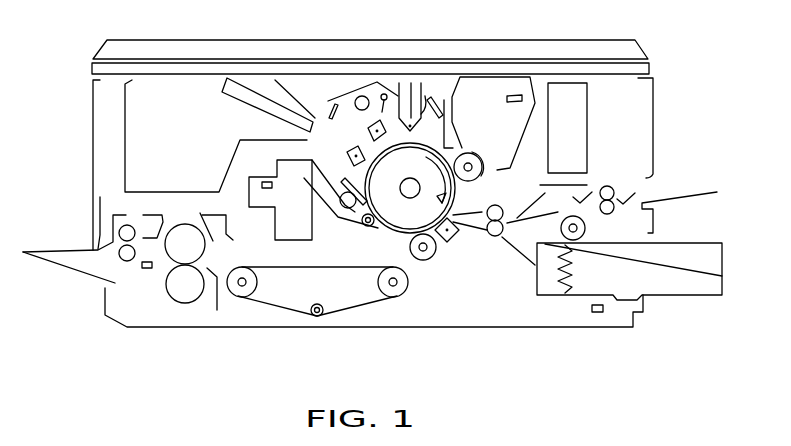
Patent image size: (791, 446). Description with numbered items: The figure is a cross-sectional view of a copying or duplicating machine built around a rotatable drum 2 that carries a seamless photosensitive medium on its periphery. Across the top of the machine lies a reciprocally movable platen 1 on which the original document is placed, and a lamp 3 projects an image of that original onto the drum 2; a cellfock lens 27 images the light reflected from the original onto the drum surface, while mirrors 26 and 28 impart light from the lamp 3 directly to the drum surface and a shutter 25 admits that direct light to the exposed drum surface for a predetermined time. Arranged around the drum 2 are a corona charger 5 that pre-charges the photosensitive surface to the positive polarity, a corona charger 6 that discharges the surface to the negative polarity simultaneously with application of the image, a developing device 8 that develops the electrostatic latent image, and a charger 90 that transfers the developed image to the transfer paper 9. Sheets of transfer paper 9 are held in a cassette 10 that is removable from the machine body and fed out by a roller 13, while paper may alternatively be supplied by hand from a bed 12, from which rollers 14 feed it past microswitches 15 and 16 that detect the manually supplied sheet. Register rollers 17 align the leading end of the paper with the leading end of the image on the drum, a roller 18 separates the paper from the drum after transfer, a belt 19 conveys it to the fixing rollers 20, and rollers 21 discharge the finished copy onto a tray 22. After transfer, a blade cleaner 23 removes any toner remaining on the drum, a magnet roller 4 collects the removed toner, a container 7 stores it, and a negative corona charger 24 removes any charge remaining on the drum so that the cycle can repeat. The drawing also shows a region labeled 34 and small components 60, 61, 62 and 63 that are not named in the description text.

The platen 1 is at (649, 70).
The drum 2 is at (418, 223).
The lamp 3 is at (358, 97).
The magnet roller 4 is at (366, 228).
The corona charger 5 is at (380, 145).
The corona charger 6 is at (420, 93).
The container 7 is at (272, 230).
The developing device 8 is at (475, 180).
The transfer paper 9 is at (682, 262).
The cassette 10 is at (722, 268).
The bed 12 is at (717, 192).
The roller 13 is at (586, 228).
The rollers 14 is at (614, 190).
The microswitch 15 is at (635, 193).
The microswitch 16 is at (583, 195).
The register rollers 17 is at (498, 235).
The roller 18 is at (431, 260).
The belt 19 is at (347, 312).
The fixing rollers 20 is at (185, 304).
The rollers 21 is at (127, 262).
The tray 22 is at (70, 272).
The blade cleaner 23 is at (373, 189).
The negative corona charger 24 is at (347, 151).
The shutter 25 is at (382, 104).
The mirror 26 is at (434, 96).
The cellfock lens 27 is at (397, 82).
The mirror 28 is at (328, 118).
The toner hopper 34 is at (511, 141).
The sensor 60 is at (598, 313).
The sensor 61 is at (507, 98).
The sensor 62 is at (263, 181).
The sensor 63 is at (147, 268).
The charger 90 is at (453, 240).